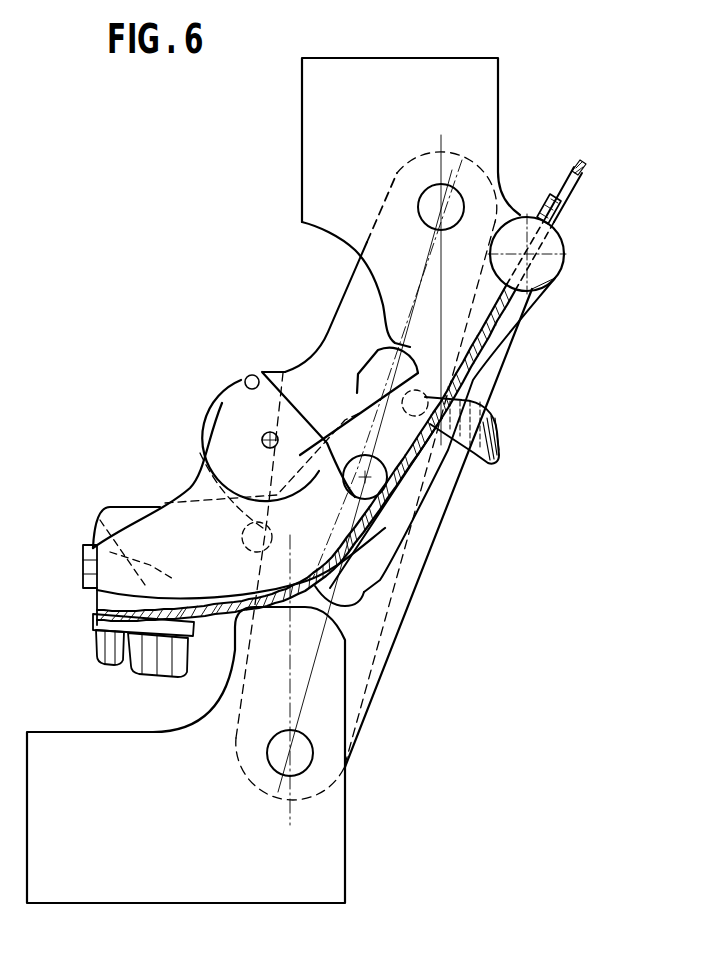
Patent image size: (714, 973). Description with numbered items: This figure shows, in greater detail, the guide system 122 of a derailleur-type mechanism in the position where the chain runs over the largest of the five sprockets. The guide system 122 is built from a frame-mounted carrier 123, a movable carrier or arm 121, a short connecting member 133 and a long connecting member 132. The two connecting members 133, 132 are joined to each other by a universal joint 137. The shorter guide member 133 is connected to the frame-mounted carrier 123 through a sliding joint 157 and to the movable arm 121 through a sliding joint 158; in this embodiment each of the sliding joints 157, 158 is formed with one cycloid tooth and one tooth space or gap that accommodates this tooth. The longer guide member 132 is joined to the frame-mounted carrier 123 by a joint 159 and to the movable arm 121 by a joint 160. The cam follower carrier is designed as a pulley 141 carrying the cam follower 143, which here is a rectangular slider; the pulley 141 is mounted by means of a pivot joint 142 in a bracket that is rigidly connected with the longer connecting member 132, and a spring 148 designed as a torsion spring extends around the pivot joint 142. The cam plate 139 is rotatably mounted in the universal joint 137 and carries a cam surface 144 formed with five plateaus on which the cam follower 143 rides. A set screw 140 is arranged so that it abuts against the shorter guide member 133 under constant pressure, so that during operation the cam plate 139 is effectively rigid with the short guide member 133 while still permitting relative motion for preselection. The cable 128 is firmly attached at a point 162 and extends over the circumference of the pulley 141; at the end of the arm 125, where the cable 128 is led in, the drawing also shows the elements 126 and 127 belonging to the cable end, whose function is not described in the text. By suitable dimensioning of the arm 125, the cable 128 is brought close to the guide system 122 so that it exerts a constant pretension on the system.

The movable carrier or arm 121 is at (185, 895).
The guide system 122 is at (425, 572).
The frame-mounted carrier 123 is at (389, 72).
The arm 125 is at (552, 262).
The cable 126 is at (548, 196).
The cable ferrule 127 is at (563, 204).
The cable 128 is at (583, 169).
The long connecting member 132 is at (400, 652).
The short connecting member 133 is at (452, 468).
The universal joint 137 is at (375, 493).
The cam plate 139 is at (358, 415).
The set screw 140 is at (508, 440).
The pulley 141 is at (163, 503).
The pivot joint 142 is at (262, 444).
The cam follower 143 is at (83, 590).
The cam surface 144 is at (90, 545).
The torsion spring 148 is at (247, 378).
The sliding joint 157 is at (445, 330).
The sliding joint 158 is at (350, 604).
The joint 159 is at (430, 200).
The joint 160 is at (300, 757).
The attachment point 162 is at (136, 662).